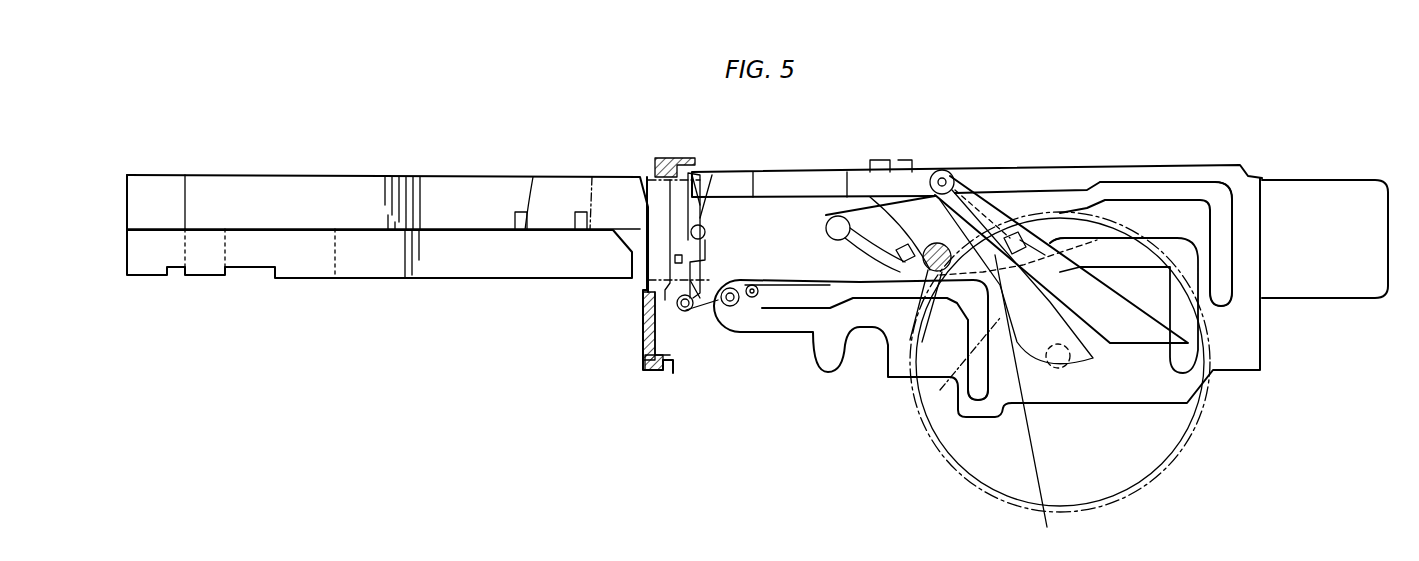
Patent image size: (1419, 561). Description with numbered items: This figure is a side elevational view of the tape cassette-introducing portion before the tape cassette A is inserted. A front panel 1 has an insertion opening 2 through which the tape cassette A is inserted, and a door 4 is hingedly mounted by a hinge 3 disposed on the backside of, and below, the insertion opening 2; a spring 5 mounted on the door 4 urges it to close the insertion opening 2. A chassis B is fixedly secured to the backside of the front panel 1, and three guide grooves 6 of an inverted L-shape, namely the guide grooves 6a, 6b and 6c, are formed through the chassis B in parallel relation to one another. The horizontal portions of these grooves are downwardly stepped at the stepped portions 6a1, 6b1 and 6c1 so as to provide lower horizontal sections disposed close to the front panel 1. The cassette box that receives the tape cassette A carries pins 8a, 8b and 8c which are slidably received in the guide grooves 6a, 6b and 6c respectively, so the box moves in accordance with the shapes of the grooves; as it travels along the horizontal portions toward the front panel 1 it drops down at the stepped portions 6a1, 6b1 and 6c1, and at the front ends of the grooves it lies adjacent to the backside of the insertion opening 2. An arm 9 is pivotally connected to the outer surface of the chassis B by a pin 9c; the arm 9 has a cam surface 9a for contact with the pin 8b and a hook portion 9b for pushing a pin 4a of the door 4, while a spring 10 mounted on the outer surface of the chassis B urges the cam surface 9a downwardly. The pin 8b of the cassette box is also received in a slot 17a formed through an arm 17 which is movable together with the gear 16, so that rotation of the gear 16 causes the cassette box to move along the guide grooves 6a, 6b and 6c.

The tape cassette A is at (433, 190).
The chassis B is at (1258, 190).
The front panel 1 is at (645, 337).
The insertion opening 2 is at (665, 157).
The hinge 3 is at (685, 312).
The door 4 is at (665, 238).
The pin of the door 4a is at (700, 180).
The spring 5 is at (700, 322).
The guide grooves 6 is at (977, 288).
The guide groove 6a is at (1220, 182).
The stepped portion 6a1 is at (1100, 182).
The guide groove 6b is at (1185, 372).
The stepped portion 6b1 is at (1045, 240).
The guide groove 6c is at (980, 393).
The stepped portion 6c1 is at (855, 330).
The pin 8a is at (972, 168).
The pin 8b is at (915, 245).
The pin 8c is at (745, 288).
The arm 9 is at (1150, 313).
The cam surface 9a is at (1082, 350).
The hook portion 9b is at (692, 196).
The pin 9c is at (942, 170).
The spring 10 is at (835, 215).
The gear 16 is at (950, 453).
The arm 17 is at (972, 340).
The slot 17a is at (1038, 405).